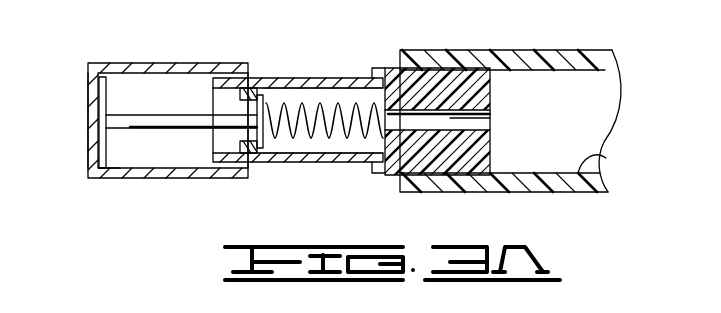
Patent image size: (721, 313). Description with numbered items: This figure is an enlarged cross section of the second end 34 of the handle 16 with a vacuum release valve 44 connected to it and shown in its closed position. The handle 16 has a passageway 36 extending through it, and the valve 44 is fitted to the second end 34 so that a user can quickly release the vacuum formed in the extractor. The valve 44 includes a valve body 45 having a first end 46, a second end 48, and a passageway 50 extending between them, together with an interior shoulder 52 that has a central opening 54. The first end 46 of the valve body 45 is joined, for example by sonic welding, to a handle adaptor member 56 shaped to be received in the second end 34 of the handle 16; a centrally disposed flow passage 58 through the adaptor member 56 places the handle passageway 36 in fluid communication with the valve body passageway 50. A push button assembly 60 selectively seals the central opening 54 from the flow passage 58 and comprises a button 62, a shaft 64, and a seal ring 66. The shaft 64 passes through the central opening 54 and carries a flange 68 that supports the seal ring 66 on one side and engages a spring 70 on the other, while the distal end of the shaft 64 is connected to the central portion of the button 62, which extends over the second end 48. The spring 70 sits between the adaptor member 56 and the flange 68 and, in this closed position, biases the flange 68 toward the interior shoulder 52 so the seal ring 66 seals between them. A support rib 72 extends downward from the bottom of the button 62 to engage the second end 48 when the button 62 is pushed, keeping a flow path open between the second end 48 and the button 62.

The handle 16 is at (570, 50).
The second end of the handle 34 is at (480, 50).
The passageway of the handle 36 is at (606, 158).
The vacuum release valve 44 is at (275, 77).
The valve body 45 is at (337, 142).
The first end of the valve body 46 is at (213, 86).
The second end of the valve body 48 is at (372, 66).
The passageway of the valve body 50 is at (293, 97).
The interior shoulder 52 is at (237, 133).
The central opening 54 is at (213, 150).
The handle adaptor member 56 is at (423, 87).
The flow passage 58 is at (490, 125).
The push button assembly 60 is at (108, 60).
The button 62 is at (88, 158).
The shaft 64 is at (127, 112).
The seal ring 66 is at (255, 95).
The flange 68 is at (262, 142).
The spring 70 is at (334, 134).
The support rib 72 is at (118, 160).